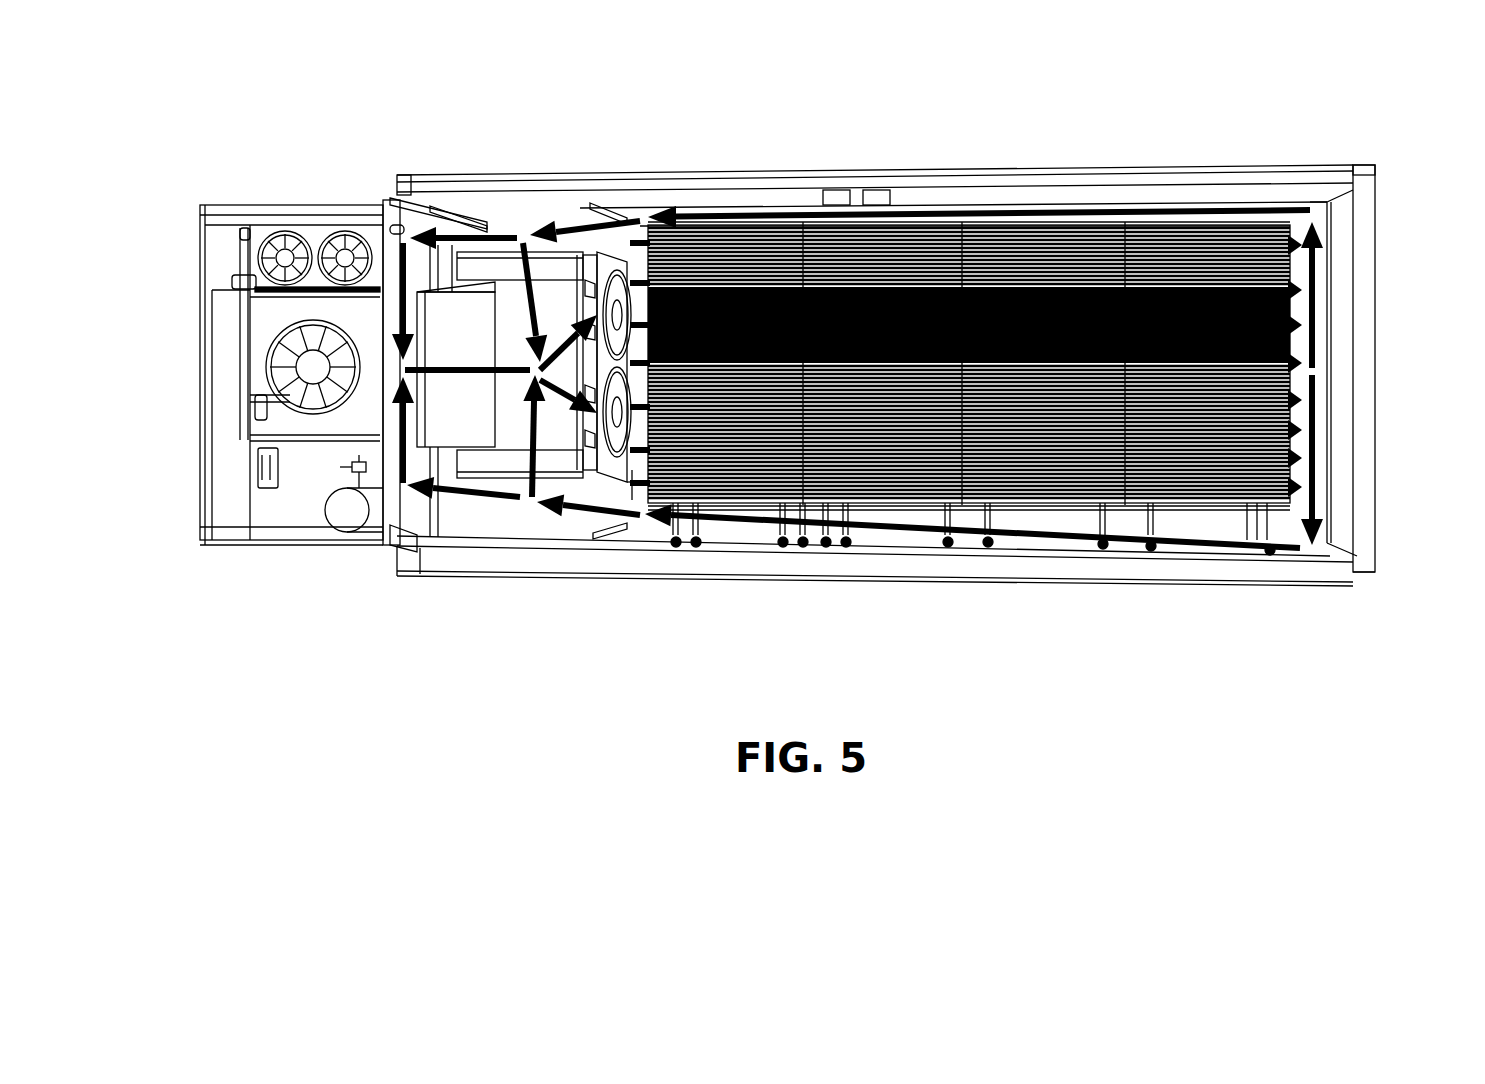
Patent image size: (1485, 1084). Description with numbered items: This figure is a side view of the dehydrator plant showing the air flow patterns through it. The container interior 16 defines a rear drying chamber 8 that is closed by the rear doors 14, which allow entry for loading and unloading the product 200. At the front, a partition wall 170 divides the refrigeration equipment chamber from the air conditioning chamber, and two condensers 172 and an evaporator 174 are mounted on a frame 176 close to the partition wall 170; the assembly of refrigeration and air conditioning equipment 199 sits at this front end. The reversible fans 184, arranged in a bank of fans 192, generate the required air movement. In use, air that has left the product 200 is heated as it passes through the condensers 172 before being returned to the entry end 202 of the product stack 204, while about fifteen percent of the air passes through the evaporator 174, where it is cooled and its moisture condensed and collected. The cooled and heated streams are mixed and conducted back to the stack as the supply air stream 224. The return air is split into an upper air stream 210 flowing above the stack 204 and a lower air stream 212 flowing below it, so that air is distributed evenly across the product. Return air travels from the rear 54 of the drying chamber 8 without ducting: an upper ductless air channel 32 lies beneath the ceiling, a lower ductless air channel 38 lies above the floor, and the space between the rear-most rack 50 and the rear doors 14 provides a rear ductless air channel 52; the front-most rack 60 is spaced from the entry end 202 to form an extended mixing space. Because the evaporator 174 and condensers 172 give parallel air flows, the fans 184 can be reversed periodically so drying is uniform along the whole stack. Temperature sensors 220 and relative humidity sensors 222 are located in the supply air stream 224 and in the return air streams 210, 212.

The drying chamber 8 is at (970, 198).
The rear doors 14 is at (1363, 290).
The interior 16 is at (1067, 197).
The upper ductless air channel 32 is at (1150, 195).
The lower ductless air channel 38 is at (1222, 525).
The rear-most rack 50 is at (1290, 223).
The rear ductless air channel 52 is at (1345, 435).
The rear of the drying chamber 54 is at (1363, 367).
The front-most rack 60 is at (640, 517).
The partition wall 170 is at (393, 205).
The condensers 172 is at (522, 250).
The evaporator 174 is at (433, 425).
The frame 176 is at (435, 280).
The reversible fans 184 is at (617, 453).
The bank of fans 192 is at (621, 222).
The refrigeration unit 199 is at (290, 330).
The product 200 is at (1068, 465).
The entry end 202 is at (632, 500).
The product stack 204 is at (962, 556).
The upper air stream 210 is at (1240, 205).
The lower air stream 212 is at (1162, 545).
The temperature sensors 220 is at (837, 198).
The relative humidity sensors 222 is at (878, 197).
The supply air stream 224 is at (713, 243).